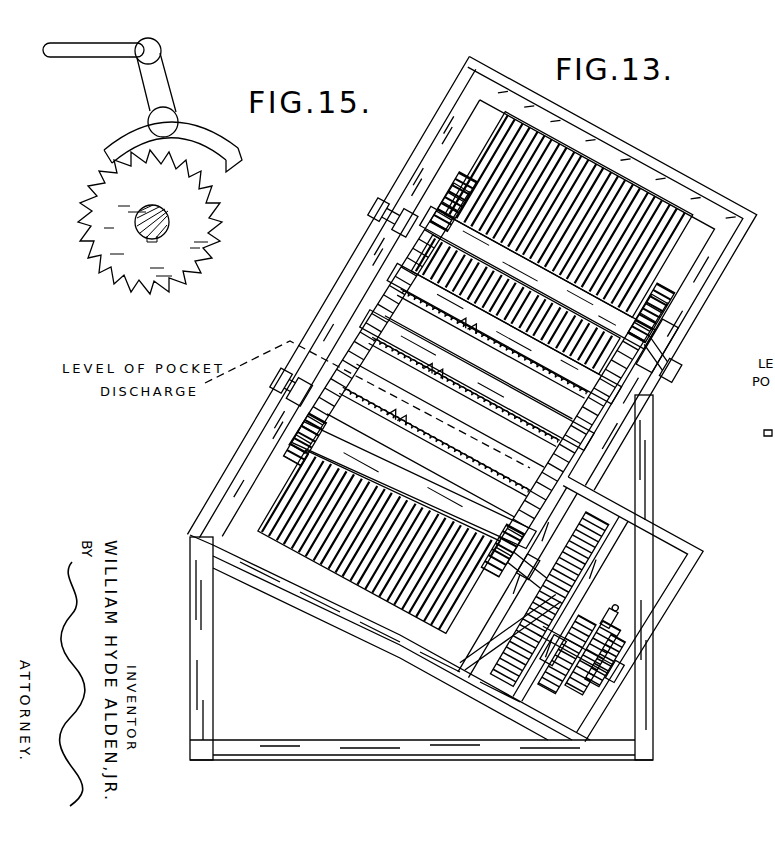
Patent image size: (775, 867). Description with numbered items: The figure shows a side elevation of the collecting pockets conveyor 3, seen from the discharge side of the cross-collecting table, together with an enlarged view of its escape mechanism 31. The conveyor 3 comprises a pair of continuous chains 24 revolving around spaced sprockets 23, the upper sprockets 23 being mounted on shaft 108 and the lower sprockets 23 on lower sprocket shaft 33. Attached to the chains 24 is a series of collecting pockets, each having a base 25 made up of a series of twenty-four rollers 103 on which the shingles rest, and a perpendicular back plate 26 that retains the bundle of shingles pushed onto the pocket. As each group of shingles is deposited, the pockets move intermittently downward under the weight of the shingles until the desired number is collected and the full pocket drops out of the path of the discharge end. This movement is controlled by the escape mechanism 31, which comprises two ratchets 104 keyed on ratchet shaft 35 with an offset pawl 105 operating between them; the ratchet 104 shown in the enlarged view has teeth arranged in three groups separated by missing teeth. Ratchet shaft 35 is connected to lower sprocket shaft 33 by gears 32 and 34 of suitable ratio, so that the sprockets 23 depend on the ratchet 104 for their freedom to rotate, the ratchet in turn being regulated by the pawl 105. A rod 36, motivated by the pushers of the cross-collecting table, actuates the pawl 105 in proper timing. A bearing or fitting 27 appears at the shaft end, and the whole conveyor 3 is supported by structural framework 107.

In FIG. 13, the collecting pockets conveyor 3 is at (639, 137).
In FIG. 13, the sprockets 23 is at (492, 563).
In FIG. 13, the continuous chains 24 is at (598, 407).
In FIG. 13, the base 25 is at (398, 612).
In FIG. 13, the back plate 26 is at (473, 385).
In FIG. 13, the bearing 27 is at (655, 342).
In FIG. 13, the escape mechanism 31 is at (653, 638).
In FIG. 13, the gear 32 is at (600, 525).
In FIG. 13, the lower sprocket shaft 33 is at (272, 386).
In FIG. 13, the gear 34 is at (502, 690).
In FIG. 15, the ratchet shaft 35 is at (136, 239).
In FIG. 13, the ratchet shaft 35 is at (640, 672).
In FIG. 15, the rod 36 is at (80, 60).
In FIG. 13, the rollers 103 is at (335, 578).
In FIG. 15, the ratchet 104 is at (222, 220).
In FIG. 13, the ratchet 104 is at (577, 660).
In FIG. 15, the pawl 105 is at (125, 129).
In FIG. 13, the pawl 105 is at (630, 612).
In FIG. 13, the structural framework 107 is at (191, 595).
In FIG. 13, the shaft 108 is at (670, 372).